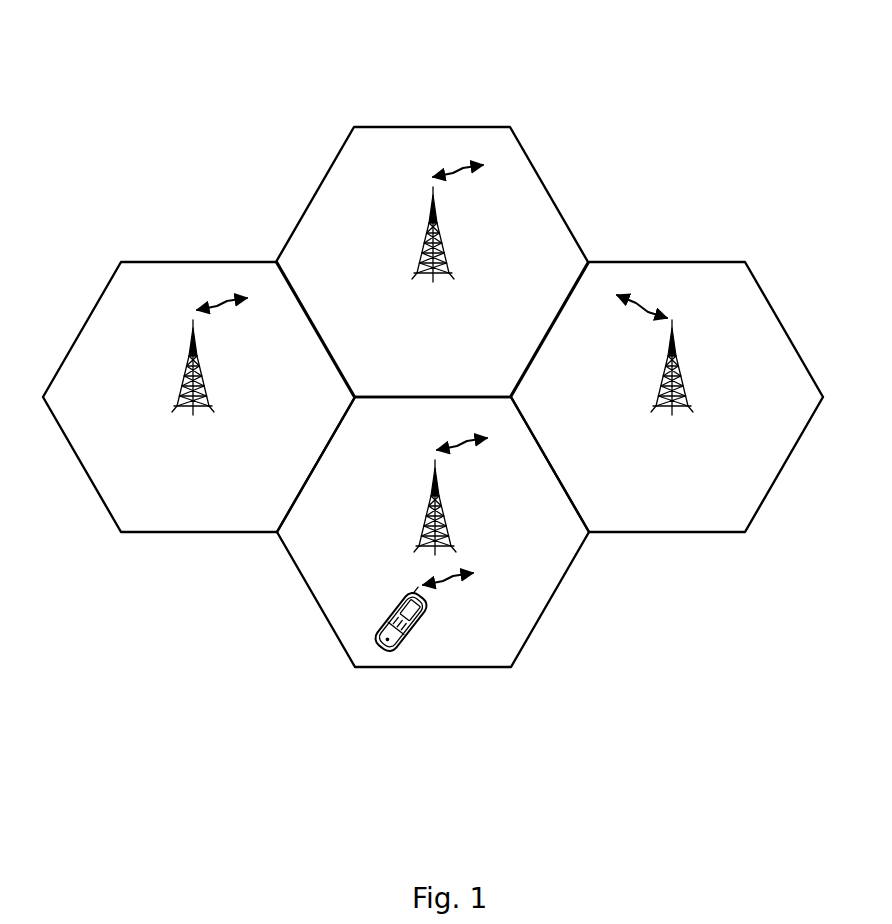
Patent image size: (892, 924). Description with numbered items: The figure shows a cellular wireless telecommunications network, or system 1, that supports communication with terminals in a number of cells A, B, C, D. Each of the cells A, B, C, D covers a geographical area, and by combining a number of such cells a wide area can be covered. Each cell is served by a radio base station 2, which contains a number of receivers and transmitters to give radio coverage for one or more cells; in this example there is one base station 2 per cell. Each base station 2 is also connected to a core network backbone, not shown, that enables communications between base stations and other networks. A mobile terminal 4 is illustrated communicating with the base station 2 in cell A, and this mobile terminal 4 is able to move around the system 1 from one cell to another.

The system 1 is at (682, 80).
The radio base station 2 is at (445, 283).
The mobile terminal 4 is at (388, 657).
The cell A is at (480, 670).
The cell B is at (520, 148).
The cell C is at (770, 303).
The cell D is at (183, 532).